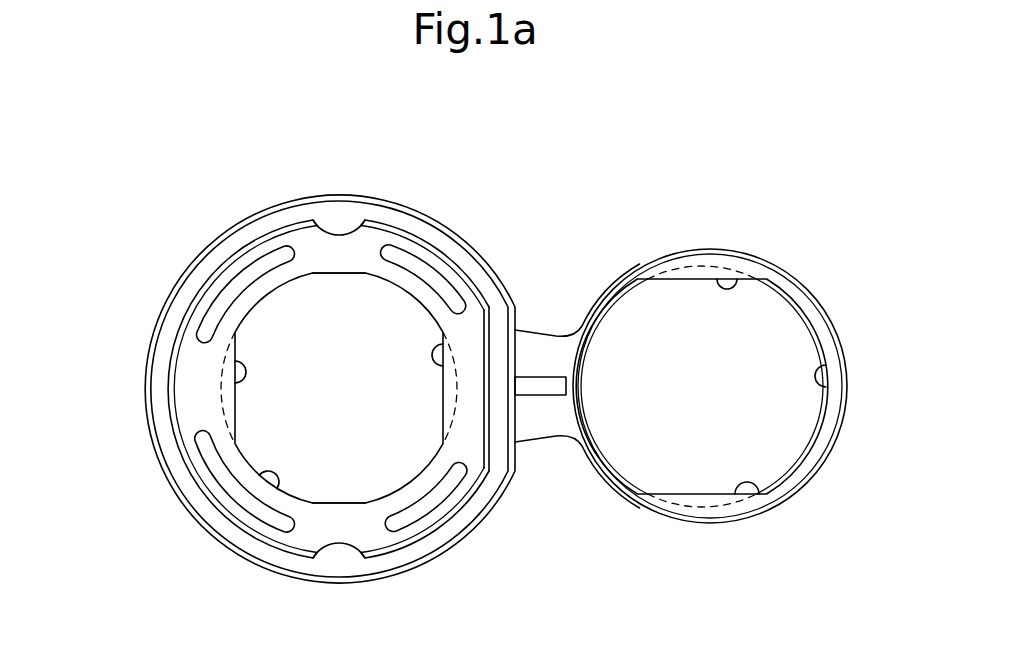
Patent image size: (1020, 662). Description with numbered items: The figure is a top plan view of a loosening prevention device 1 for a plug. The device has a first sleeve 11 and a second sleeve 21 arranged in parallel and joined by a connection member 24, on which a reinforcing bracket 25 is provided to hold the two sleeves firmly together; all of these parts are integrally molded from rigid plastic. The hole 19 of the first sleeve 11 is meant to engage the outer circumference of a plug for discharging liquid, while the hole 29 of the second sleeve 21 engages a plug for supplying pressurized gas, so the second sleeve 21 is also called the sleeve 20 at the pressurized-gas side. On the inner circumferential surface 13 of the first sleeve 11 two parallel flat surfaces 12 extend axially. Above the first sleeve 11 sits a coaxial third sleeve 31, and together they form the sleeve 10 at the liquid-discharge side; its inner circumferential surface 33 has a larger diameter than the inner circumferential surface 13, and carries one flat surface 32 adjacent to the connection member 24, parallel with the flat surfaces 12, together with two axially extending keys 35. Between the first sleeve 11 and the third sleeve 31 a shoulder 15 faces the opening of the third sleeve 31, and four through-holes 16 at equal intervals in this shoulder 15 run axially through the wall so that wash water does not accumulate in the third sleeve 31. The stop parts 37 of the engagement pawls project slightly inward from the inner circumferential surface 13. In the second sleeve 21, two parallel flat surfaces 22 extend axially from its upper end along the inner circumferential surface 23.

The loosening prevention device 1 is at (593, 160).
The sleeve at the side of the plug for discharging liquid 10 is at (178, 218).
The first sleeve 11 is at (252, 431).
The flat surfaces 12 is at (445, 350).
The inner circumferential surface 13 is at (278, 480).
The shoulder 15 is at (368, 246).
The through-holes 16 is at (262, 262).
The hole 19 is at (364, 358).
The sleeve at the side of the plug for supplying pressurized-gas 20 is at (845, 255).
The second sleeve 21 is at (814, 327).
The flat surfaces 22 is at (731, 297).
The inner circumferential surface 23 is at (812, 387).
The connection member 24 is at (553, 443).
The reinforcing bracket 25 is at (541, 377).
The hole 29 is at (727, 358).
The third sleeve 31 is at (287, 213).
The flat surface 32 is at (489, 437).
The inner circumferential surface 33 is at (182, 358).
The keys 35 is at (330, 217).
The stop parts 37 is at (323, 275).